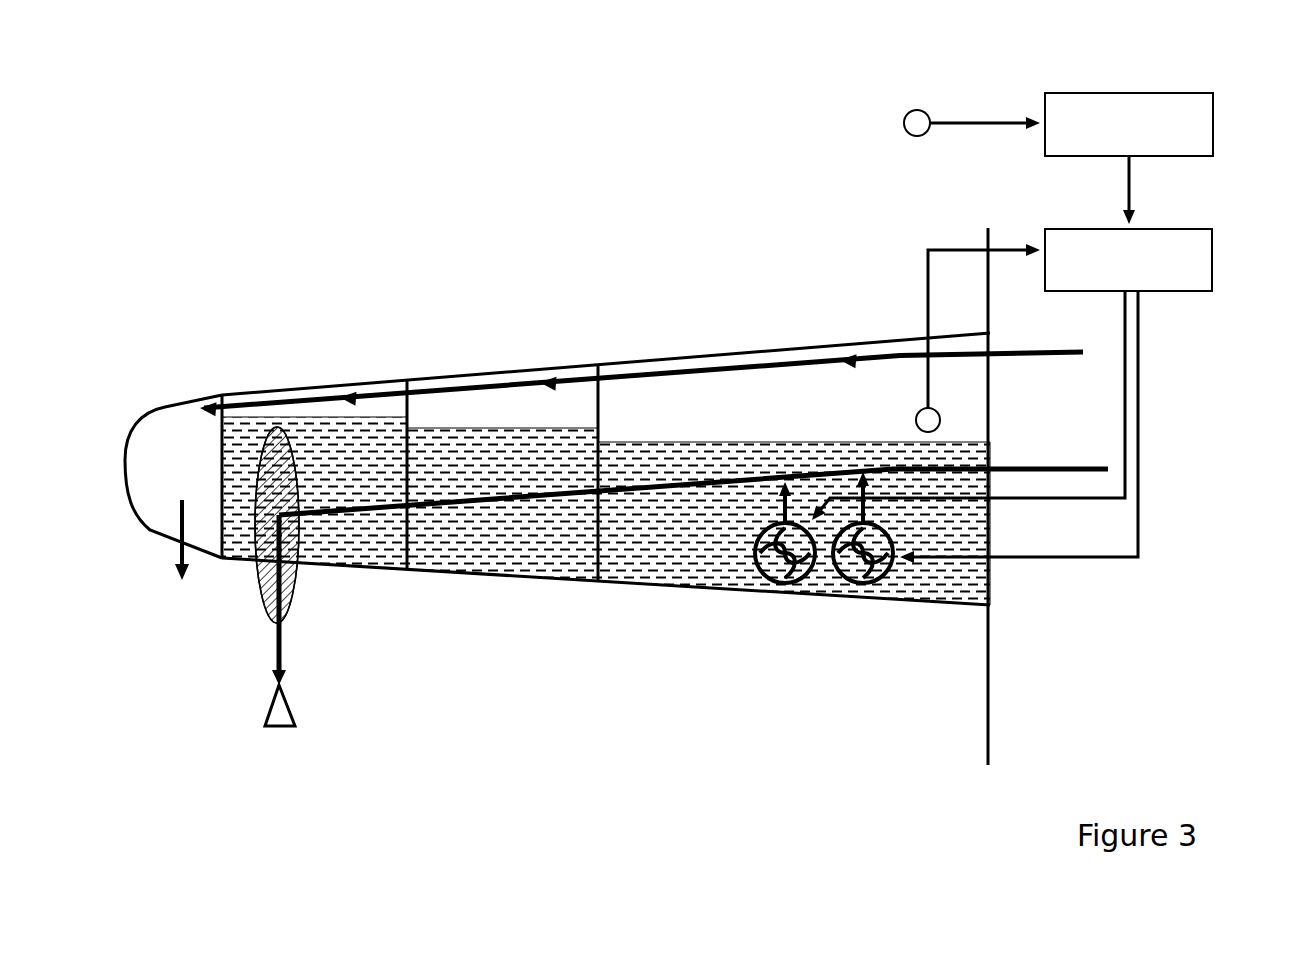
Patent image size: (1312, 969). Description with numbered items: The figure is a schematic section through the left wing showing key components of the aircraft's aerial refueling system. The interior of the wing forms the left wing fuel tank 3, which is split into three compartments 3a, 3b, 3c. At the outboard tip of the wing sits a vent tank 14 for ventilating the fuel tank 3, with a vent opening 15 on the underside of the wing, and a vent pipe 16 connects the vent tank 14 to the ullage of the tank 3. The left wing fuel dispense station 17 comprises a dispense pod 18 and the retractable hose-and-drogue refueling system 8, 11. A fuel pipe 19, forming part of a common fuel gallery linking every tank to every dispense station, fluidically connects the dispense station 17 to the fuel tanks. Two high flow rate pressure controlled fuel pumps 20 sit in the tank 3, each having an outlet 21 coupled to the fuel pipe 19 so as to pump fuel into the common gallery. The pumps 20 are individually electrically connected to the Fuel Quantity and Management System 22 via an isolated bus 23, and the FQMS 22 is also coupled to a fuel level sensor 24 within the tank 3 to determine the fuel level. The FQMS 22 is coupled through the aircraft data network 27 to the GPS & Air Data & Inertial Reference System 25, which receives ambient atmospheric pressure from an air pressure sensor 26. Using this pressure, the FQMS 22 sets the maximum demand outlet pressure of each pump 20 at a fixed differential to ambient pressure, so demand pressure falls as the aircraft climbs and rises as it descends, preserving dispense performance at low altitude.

The left wing fuel tank 3 is at (606, 520).
The fuel tank compartment 3a is at (723, 565).
The fuel tank compartment 3b is at (517, 540).
The fuel tank compartment 3c is at (355, 548).
The retractable hose-and-drogue refueling system 8 is at (282, 658).
The retractable hose-and-drogue refueling system 11 is at (283, 713).
The vent tank 14 is at (202, 447).
The vent opening 15 is at (177, 553).
The vent pipe 16 is at (747, 363).
The left wing fuel dispense station 17 is at (255, 583).
The dispense pod 18 is at (295, 587).
The fuel pipe 19 is at (632, 480).
The pressure controlled fuel pumps 20 is at (863, 580).
The outlet 21 is at (780, 493).
The Fuel Quantity and Management System 22 is at (1205, 275).
The isolated bus 23 is at (1170, 478).
The fuel level sensor 24 is at (919, 412).
The GPS & Air Data & Inertial Reference System 25 is at (1215, 120).
The air pressure sensor 26 is at (918, 110).
The aircraft data network 27 is at (1137, 188).